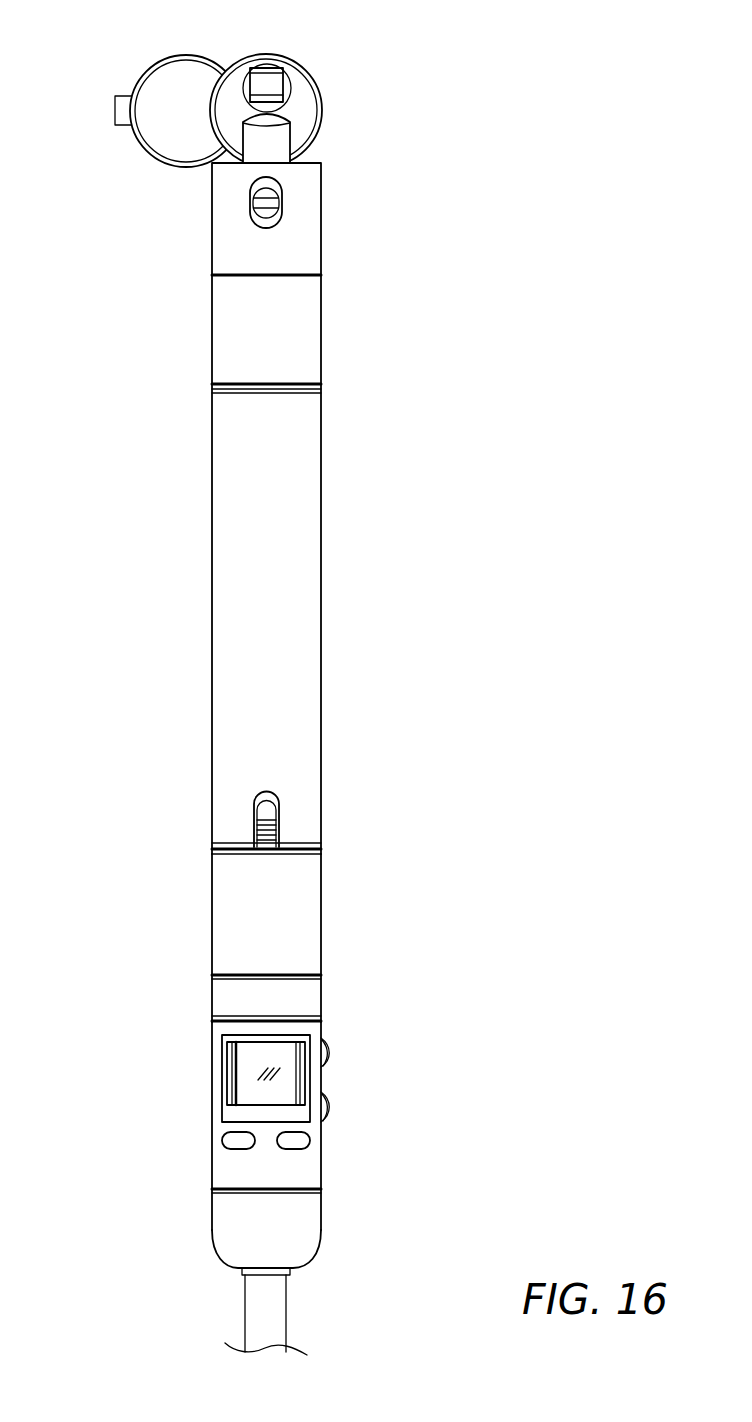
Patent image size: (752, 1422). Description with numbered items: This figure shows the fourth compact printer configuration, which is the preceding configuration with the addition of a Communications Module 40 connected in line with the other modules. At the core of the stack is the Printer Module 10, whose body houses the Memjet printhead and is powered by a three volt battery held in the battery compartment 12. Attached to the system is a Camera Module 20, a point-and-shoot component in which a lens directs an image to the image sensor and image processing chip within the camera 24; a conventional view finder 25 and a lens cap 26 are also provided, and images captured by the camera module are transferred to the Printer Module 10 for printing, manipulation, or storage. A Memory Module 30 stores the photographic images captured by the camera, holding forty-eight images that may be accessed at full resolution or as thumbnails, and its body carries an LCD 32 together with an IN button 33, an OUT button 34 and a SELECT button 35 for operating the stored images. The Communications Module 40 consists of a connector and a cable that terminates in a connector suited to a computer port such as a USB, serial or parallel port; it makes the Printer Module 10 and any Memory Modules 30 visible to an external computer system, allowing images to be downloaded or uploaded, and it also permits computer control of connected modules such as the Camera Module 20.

The printer module 10 is at (322, 667).
The battery compartment 12 is at (322, 897).
The camera module 20 is at (321, 233).
The camera 24 is at (322, 110).
The view finder 25 is at (270, 83).
The lens cap 26 is at (143, 78).
The memory module 30 is at (322, 1095).
The LCD 32 is at (247, 1080).
The IN button 33 is at (227, 1140).
The OUT button 34 is at (297, 1139).
The SELECT button 35 is at (322, 1037).
The communications module 40 is at (315, 1247).